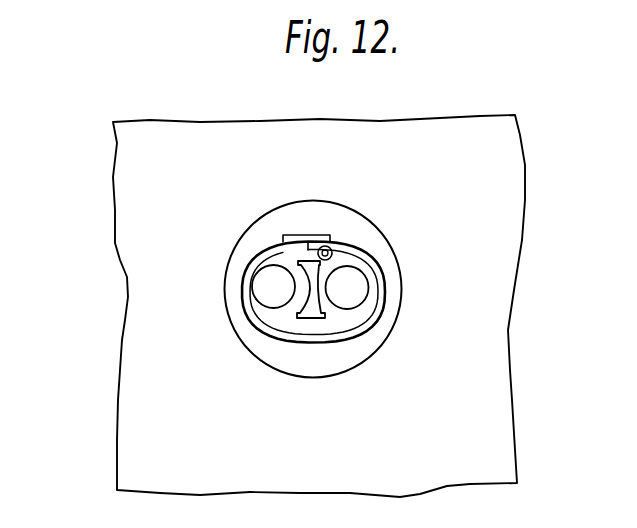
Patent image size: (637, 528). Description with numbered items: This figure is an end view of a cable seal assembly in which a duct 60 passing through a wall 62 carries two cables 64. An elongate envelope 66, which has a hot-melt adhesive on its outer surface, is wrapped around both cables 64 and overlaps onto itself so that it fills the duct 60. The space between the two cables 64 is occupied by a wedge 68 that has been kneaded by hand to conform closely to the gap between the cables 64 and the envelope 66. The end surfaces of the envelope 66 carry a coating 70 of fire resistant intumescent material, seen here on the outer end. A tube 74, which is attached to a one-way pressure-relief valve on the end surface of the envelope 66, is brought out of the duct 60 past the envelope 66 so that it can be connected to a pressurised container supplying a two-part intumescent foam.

The duct 60 is at (276, 225).
The wall 62 is at (192, 182).
The cables 64 is at (273, 286).
The elongate envelope 66 is at (268, 342).
The wedge 68 is at (315, 310).
The coating 70 is at (349, 333).
The tube 74 is at (328, 247).